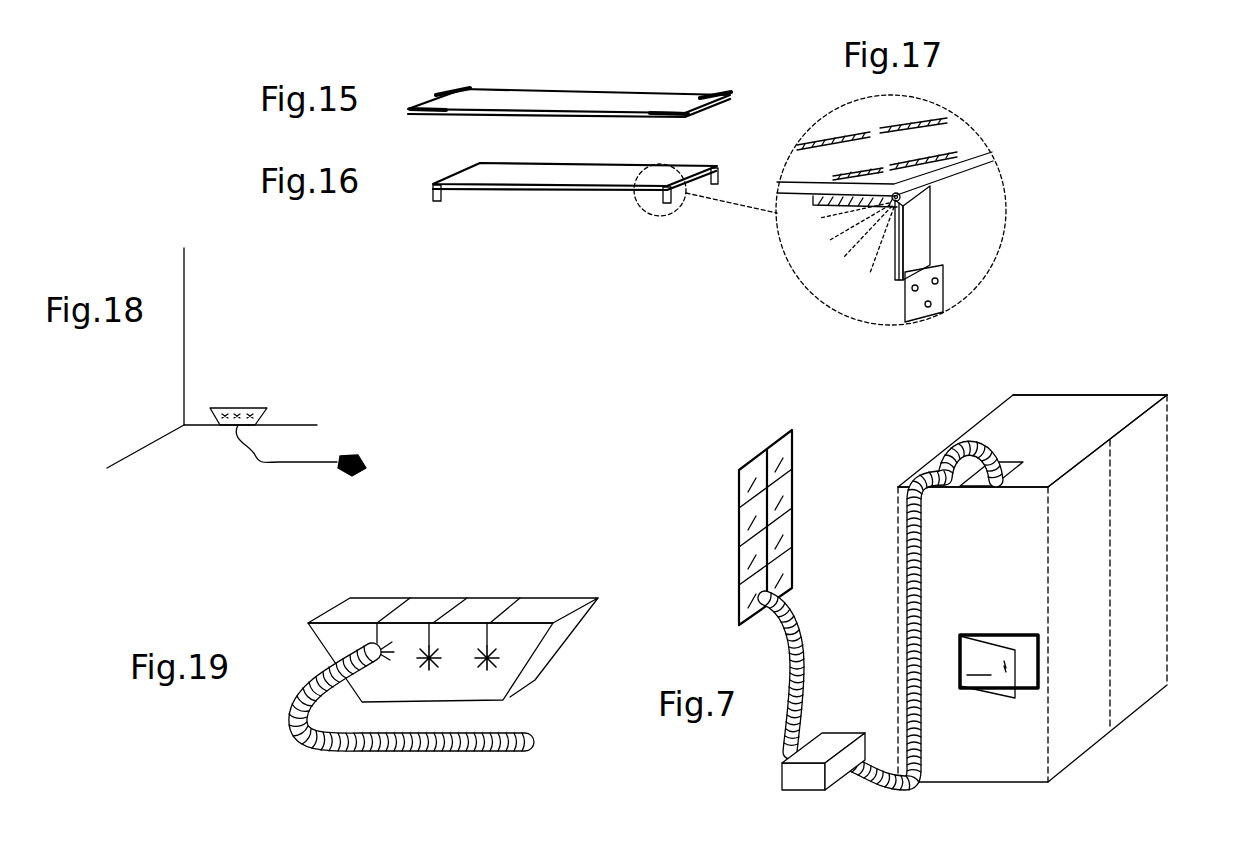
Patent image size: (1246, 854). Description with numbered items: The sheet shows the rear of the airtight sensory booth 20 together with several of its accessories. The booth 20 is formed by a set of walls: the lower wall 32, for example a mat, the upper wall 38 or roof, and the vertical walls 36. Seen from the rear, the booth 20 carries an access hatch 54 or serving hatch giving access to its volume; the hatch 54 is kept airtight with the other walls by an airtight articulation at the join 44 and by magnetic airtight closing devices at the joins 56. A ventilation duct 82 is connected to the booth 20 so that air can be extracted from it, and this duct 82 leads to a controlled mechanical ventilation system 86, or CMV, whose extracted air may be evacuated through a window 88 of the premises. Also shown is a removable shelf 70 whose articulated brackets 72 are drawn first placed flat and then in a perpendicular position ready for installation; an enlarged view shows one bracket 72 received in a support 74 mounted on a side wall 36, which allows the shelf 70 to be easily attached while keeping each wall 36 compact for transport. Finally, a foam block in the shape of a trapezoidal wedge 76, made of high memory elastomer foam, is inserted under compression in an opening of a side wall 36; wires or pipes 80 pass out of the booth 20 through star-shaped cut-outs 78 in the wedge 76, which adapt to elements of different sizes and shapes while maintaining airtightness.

In FIG. 7, the sensory booth 20 is at (931, 404).
In FIG. 18, the lower wall 32 is at (205, 486).
In FIG. 18, the vertical wall 36 is at (155, 400).
In FIG. 7, the vertical wall 36 is at (992, 544).
In FIG. 7, the upper wall 38 is at (1052, 440).
In FIG. 7, the join 44 is at (1110, 490).
In FIG. 7, the access hatch 54 is at (999, 661).
In FIG. 7, the joins 56 is at (995, 636).
In FIG. 15, the shelf 70 is at (470, 130).
In FIG. 16, the shelf 70 is at (549, 218).
In FIG. 17, the shelf 70 is at (958, 142).
In FIG. 15, the articulated bracket 72 is at (423, 106).
In FIG. 16, the articulated bracket 72 is at (435, 201).
In FIG. 17, the articulated bracket 72 is at (918, 231).
In FIG. 17, the support 74 is at (905, 298).
In FIG. 18, the trapezoidal wedge 76 is at (241, 393).
In FIG. 19, the trapezoidal wedge 76 is at (463, 580).
In FIG. 19, the star-shaped cut-out 78 is at (487, 633).
In FIG. 18, the wires or pipes 80 is at (305, 462).
In FIG. 19, the wires or pipes 80 is at (290, 702).
In FIG. 7, the ventilation duct 82 is at (907, 543).
In FIG. 7, the controlled mechanical ventilation system 86 is at (823, 738).
In FIG. 7, the window 88 is at (803, 489).